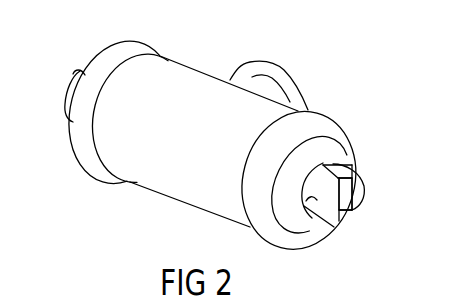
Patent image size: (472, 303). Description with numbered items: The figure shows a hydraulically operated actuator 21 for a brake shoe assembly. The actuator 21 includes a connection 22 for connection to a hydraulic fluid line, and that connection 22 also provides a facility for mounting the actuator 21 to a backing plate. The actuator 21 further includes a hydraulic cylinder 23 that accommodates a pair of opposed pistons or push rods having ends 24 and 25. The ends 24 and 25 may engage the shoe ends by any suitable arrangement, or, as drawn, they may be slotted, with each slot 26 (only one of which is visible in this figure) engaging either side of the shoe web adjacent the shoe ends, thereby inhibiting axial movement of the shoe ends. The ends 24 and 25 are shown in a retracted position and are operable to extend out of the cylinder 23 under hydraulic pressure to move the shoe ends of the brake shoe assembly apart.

The actuator 21 is at (166, 204).
The connection 22 is at (283, 73).
The hydraulic cylinder 23 is at (163, 170).
The end 24 is at (74, 70).
The end 25 is at (330, 222).
The slot 26 is at (348, 185).